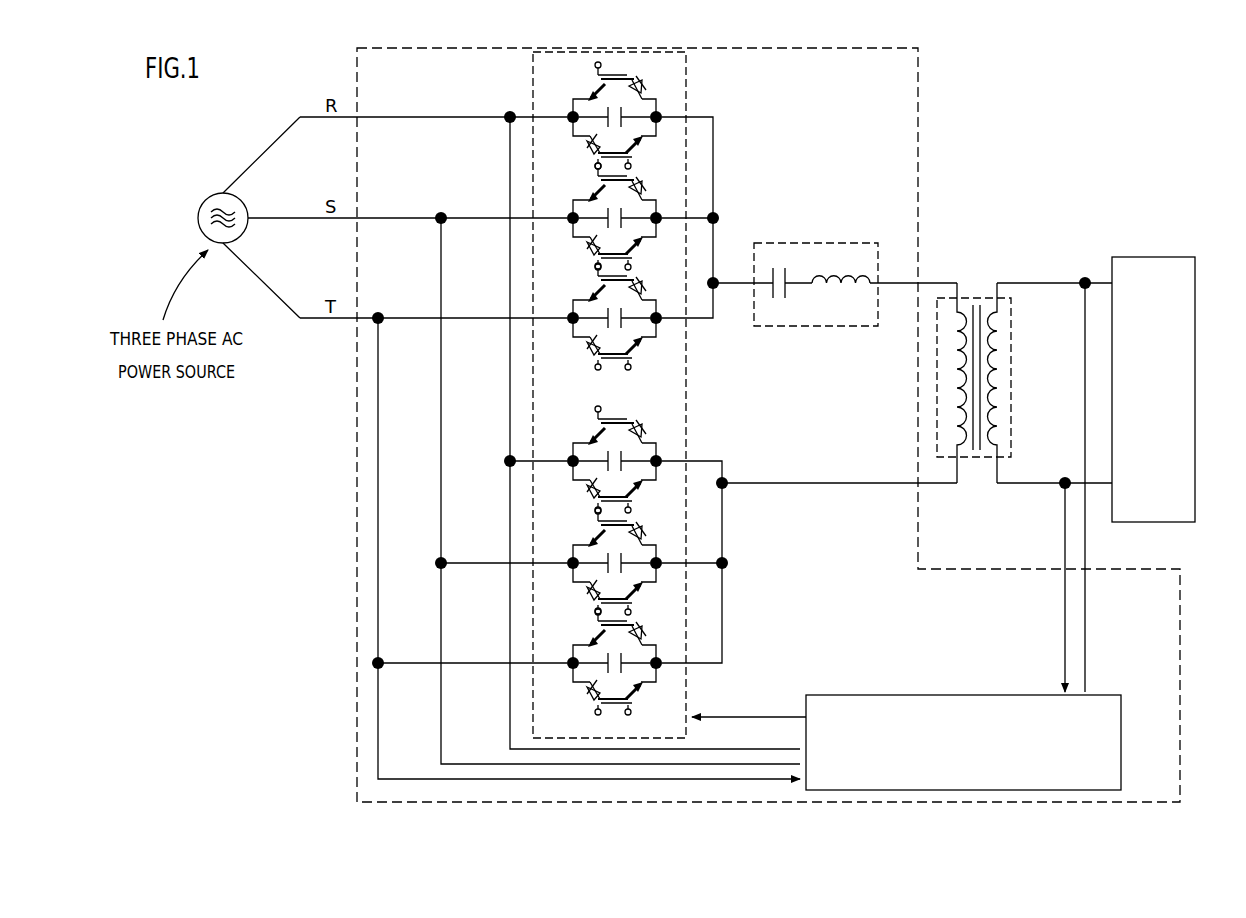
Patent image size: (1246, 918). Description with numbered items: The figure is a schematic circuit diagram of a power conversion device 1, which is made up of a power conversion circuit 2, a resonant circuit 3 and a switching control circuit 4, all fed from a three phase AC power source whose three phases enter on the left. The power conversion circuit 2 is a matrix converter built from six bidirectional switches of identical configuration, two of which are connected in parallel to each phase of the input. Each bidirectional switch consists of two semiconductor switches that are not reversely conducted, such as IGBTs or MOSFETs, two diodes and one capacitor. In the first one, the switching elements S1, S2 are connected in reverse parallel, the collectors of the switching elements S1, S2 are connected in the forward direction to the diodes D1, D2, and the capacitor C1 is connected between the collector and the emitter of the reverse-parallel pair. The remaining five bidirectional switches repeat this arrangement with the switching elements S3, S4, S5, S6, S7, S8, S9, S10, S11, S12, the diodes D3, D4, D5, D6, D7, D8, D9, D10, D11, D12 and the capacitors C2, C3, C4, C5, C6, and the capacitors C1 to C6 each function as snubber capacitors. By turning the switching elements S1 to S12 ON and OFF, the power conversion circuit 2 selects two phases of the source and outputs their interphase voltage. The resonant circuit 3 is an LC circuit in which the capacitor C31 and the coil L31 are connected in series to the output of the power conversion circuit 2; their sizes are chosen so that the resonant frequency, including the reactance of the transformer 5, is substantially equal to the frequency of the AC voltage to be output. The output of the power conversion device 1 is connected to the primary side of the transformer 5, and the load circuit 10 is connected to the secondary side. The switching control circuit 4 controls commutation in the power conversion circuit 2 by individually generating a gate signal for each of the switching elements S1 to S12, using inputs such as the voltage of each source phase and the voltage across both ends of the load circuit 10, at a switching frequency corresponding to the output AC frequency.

The power conversion device 1 is at (910, 140).
The power conversion circuit 2 is at (686, 103).
The resonant circuit 3 is at (835, 243).
The switching control circuit 4 is at (1115, 705).
The transformer 5 is at (973, 305).
The load circuit 10 is at (1184, 265).
The switching element S1 is at (600, 89).
The switching element S2 is at (627, 145).
The switching element S3 is at (600, 190).
The switching element S4 is at (627, 246).
The switching element S5 is at (600, 290).
The switching element S6 is at (627, 346).
The switching element S7 is at (600, 433).
The switching element S8 is at (627, 489).
The switching element S9 is at (600, 535).
The switching element S10 is at (632, 591).
The switching element S11 is at (598, 635).
The switching element S12 is at (632, 691).
The diode D1 is at (649, 96).
The diode D2 is at (582, 136).
The diode D3 is at (649, 197).
The diode D4 is at (582, 237).
The diode D5 is at (649, 297).
The diode D6 is at (582, 337).
The diode D7 is at (649, 440).
The diode D8 is at (582, 480).
The diode D9 is at (649, 542).
The diode D10 is at (579, 582).
The diode D11 is at (654, 642).
The diode D12 is at (579, 682).
The capacitor C1 is at (614, 121).
The capacitor C2 is at (614, 222).
The capacitor C3 is at (614, 322).
The capacitor C4 is at (614, 465).
The capacitor C5 is at (614, 567).
The capacitor C6 is at (614, 667).
The capacitor C31 is at (783, 296).
The coil L31 is at (841, 300).